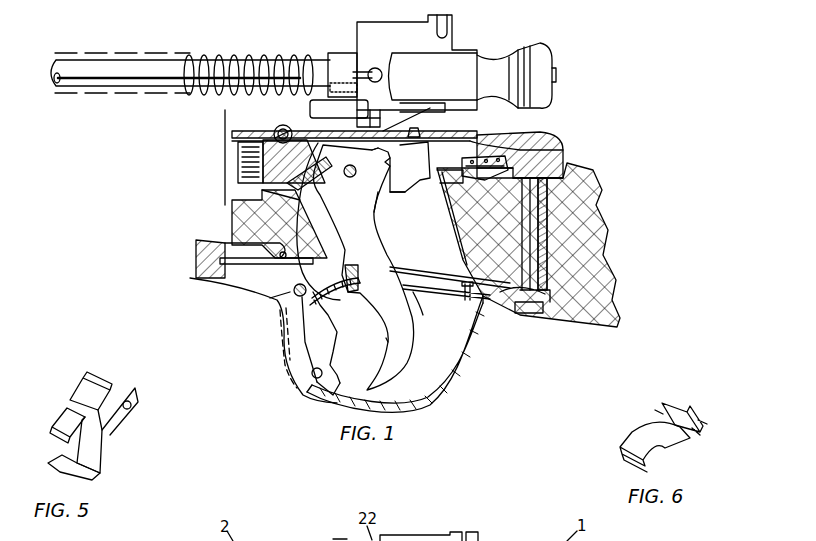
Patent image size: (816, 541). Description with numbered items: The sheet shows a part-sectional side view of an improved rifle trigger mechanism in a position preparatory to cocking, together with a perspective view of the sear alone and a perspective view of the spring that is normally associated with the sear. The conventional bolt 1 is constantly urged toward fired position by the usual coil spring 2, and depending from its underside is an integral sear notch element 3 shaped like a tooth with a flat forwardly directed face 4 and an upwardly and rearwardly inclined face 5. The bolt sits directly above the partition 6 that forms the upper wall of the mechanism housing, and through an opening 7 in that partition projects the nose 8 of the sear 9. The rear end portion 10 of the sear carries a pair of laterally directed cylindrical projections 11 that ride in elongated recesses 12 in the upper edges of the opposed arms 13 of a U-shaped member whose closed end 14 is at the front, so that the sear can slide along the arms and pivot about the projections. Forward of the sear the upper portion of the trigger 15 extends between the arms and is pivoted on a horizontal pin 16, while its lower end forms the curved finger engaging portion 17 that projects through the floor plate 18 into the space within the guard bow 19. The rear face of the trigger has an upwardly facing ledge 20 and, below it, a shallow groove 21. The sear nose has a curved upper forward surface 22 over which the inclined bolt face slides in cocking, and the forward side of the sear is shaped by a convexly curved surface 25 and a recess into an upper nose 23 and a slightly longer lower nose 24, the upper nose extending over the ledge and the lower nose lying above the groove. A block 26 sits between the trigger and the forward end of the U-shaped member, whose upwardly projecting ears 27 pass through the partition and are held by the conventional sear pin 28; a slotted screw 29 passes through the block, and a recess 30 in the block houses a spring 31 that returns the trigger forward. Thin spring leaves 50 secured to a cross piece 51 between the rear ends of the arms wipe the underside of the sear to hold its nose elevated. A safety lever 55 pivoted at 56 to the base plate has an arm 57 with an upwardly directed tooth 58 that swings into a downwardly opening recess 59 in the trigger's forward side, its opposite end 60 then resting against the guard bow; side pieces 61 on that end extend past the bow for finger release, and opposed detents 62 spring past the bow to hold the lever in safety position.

In FIG. 1, the bolt 1 is at (520, 43).
In FIG. 1, the coil spring 2 is at (196, 57).
In FIG. 1, the sear notch element 3 is at (380, 125).
In FIG. 1, the flat forwardly directed face 4 is at (362, 128).
In FIG. 1, the upwardly and rearwardly inclined face 5 is at (417, 112).
In FIG. 1, the partition 6 is at (313, 132).
In FIG. 1, the opening 7 is at (393, 128).
In FIG. 1, the nose of sear 8 is at (383, 130).
In FIG. 1, the sear 9 is at (470, 240).
In FIG. 1, the rear end portion of sear 10 is at (453, 222).
In FIG. 5, the rear end portion of sear 10 is at (118, 414).
In FIG. 1, the cylindrical projections 11 is at (464, 136).
In FIG. 5, the cylindrical projections 11 is at (128, 404).
In FIG. 1, the recesses 12 is at (488, 136).
In FIG. 1, the arms 13 is at (537, 136).
In FIG. 1, the closed end of U-shaped member 14 is at (240, 165).
In FIG. 1, the trigger 15 is at (362, 237).
In FIG. 1, the horizontal pin 16 is at (347, 178).
In FIG. 1, the curved finger engaging portion 17 is at (386, 338).
In FIG. 1, the floor plate 18 is at (417, 294).
In FIG. 1, the guard bow 19 is at (468, 373).
In FIG. 1, the upwardly facing ledge 20 is at (378, 172).
In FIG. 1, the groove 21 is at (378, 198).
In FIG. 1, the curved surface of sear nose 22 is at (406, 128).
In FIG. 5, the curved surface of sear nose 22 is at (85, 393).
In FIG. 1, the upper nose 23 is at (397, 155).
In FIG. 5, the upper nose 23 is at (95, 436).
In FIG. 1, the lower nose 24 is at (388, 193).
In FIG. 5, the lower nose 24 is at (90, 470).
In FIG. 1, the convexly curved surface 25 is at (380, 126).
In FIG. 5, the convexly curved surface 25 is at (63, 425).
In FIG. 1, the block 26 is at (240, 142).
In FIG. 1, the ears 27 is at (276, 134).
In FIG. 1, the pin 28 is at (279, 128).
In FIG. 1, the screw 29 is at (242, 185).
In FIG. 1, the recess 30 is at (268, 220).
In FIG. 1, the spring 31 is at (276, 210).
In FIG. 1, the spring leaves 50 is at (482, 178).
In FIG. 6, the spring leaves 50 is at (635, 446).
In FIG. 1, the cross piece 51 is at (478, 165).
In FIG. 6, the cross piece 51 is at (680, 408).
In FIG. 1, the lever 55 is at (280, 352).
In FIG. 1, the pivot 56 is at (293, 292).
In FIG. 1, the arm of lever 57 is at (318, 300).
In FIG. 1, the tooth 58 is at (348, 280).
In FIG. 1, the recess 59 is at (358, 283).
In FIG. 1, the opposite end of lever 60 is at (338, 384).
In FIG. 1, the side pieces 61 is at (325, 388).
In FIG. 1, the detents 62 is at (311, 374).